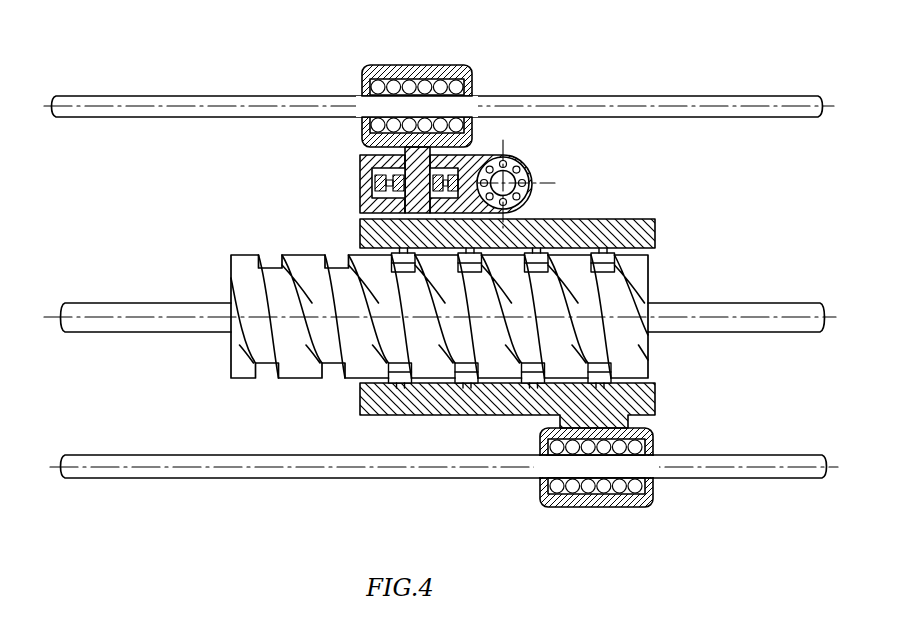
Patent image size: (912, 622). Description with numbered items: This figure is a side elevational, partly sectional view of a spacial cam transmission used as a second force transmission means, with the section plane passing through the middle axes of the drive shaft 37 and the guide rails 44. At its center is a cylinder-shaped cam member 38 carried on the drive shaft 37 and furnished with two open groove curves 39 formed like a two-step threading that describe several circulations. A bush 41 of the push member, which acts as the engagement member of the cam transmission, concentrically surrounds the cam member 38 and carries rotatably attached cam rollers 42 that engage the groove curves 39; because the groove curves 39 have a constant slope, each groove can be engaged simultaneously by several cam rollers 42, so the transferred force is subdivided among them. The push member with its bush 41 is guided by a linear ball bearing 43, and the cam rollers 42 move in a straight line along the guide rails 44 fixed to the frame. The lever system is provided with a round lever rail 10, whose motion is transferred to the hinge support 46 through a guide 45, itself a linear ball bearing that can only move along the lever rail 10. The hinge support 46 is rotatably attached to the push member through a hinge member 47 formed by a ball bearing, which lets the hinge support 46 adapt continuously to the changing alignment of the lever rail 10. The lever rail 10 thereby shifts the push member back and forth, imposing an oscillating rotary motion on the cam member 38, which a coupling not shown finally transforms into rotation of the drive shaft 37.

The lever rail 10 is at (519, 174).
The drive shaft 37 is at (740, 310).
The cam member 38 is at (247, 272).
The groove curves 39 is at (276, 271).
The bush 41 is at (640, 231).
The cam rollers 42 is at (395, 378).
The linear ball bearing 43 is at (452, 65).
The guide rails 44 is at (199, 107).
The guide 45 is at (516, 162).
The hinge support 46 is at (532, 190).
The hinge member 47 is at (360, 158).